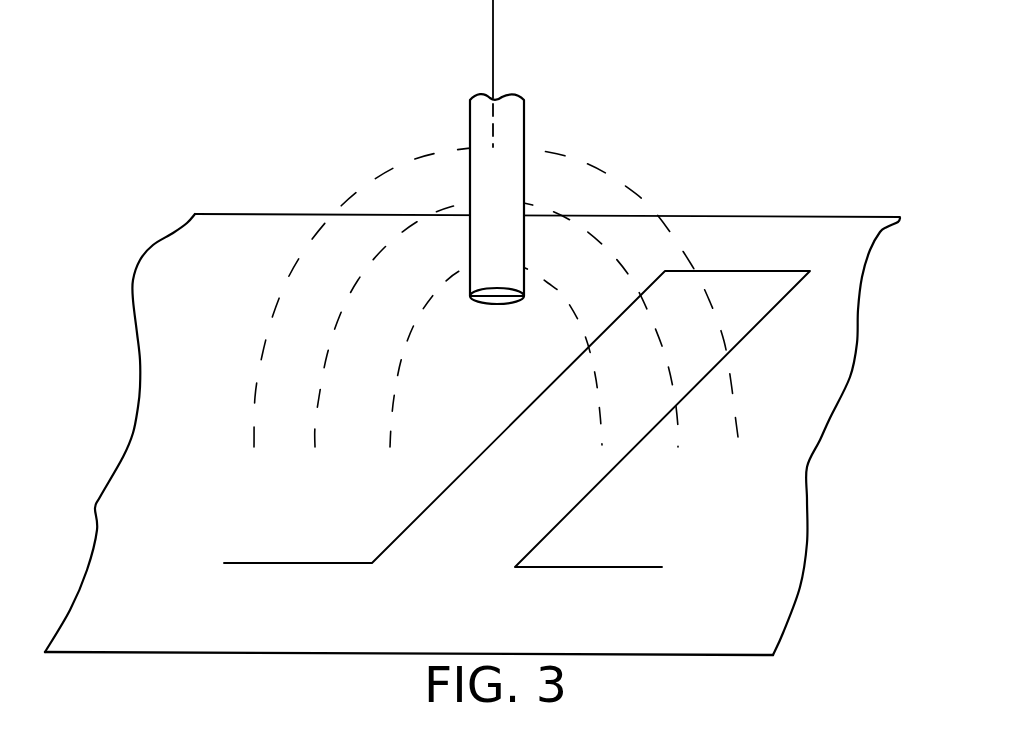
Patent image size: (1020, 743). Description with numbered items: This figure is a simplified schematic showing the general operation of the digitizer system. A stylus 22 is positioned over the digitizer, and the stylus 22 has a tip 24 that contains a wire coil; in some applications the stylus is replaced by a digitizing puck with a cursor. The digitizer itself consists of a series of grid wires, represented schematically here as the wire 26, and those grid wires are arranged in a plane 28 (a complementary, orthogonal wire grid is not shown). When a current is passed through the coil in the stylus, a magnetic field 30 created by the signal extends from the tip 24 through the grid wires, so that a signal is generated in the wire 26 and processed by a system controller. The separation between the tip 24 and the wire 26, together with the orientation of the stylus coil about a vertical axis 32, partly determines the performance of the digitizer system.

The stylus 22 is at (480, 138).
The tip 24 is at (491, 299).
The wire 26 is at (591, 565).
The plane 28 is at (819, 228).
The magnetic field 30 is at (288, 281).
The vertical axis 32 is at (492, 21).